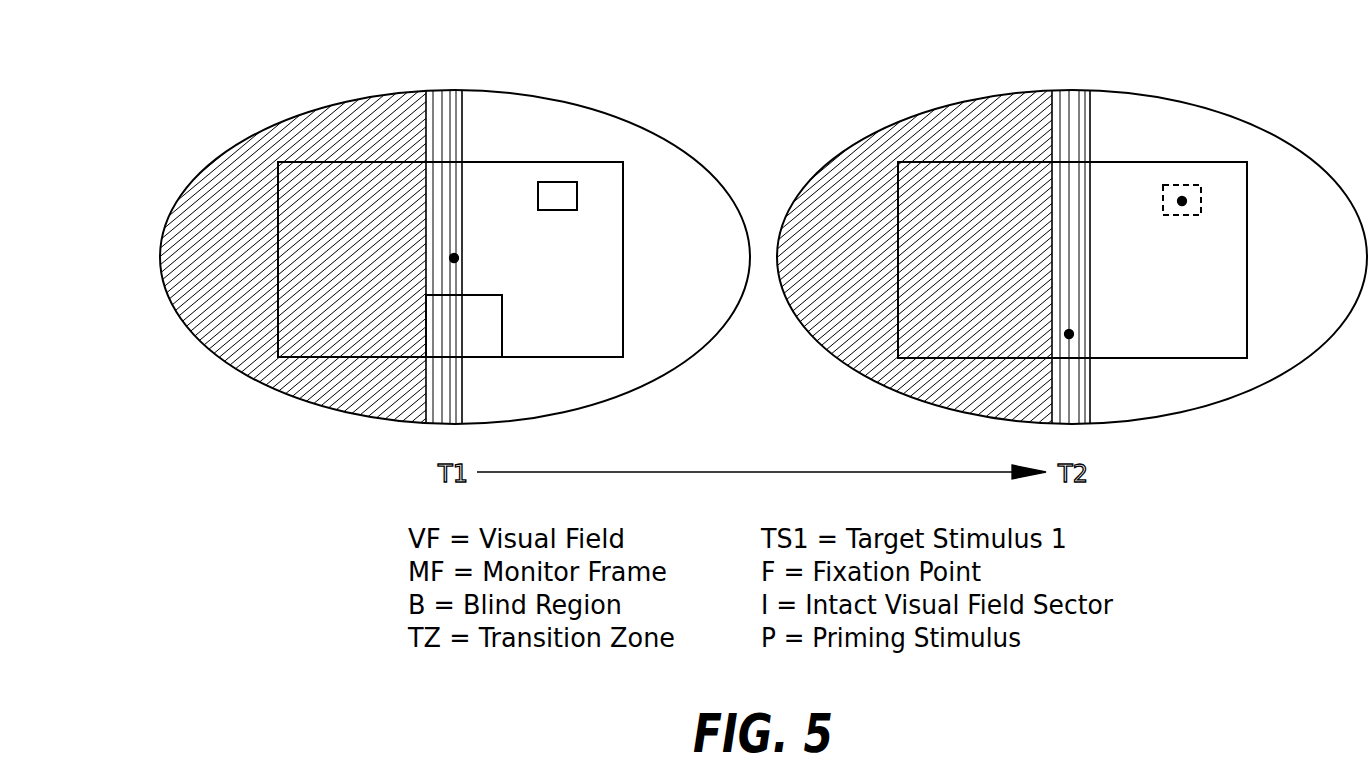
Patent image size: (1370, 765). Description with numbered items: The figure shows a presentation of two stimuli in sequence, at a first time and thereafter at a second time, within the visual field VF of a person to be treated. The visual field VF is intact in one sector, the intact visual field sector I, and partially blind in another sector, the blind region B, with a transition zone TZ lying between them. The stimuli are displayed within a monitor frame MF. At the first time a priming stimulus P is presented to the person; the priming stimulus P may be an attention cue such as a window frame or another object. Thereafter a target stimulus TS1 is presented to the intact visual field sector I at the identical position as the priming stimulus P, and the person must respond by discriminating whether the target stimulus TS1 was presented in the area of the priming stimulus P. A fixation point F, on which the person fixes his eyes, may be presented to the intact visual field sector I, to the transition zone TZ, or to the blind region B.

The visual field VF is at (373, 92).
The monitor frame MF is at (278, 193).
The blind region B is at (323, 132).
The transition zone TZ is at (442, 112).
The target stimulus TS1 is at (1183, 192).
The fixation point F is at (458, 257).
The intact visual field sector I is at (540, 132).
The priming stimulus P is at (578, 183).